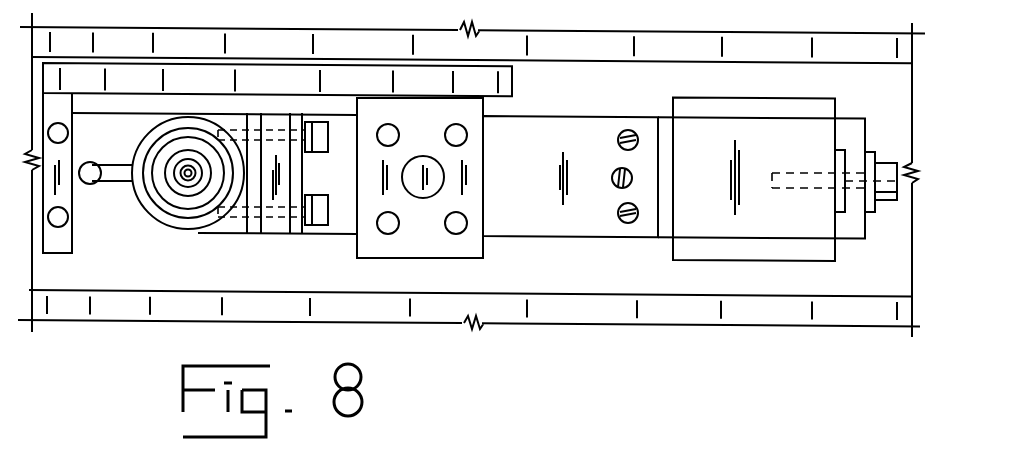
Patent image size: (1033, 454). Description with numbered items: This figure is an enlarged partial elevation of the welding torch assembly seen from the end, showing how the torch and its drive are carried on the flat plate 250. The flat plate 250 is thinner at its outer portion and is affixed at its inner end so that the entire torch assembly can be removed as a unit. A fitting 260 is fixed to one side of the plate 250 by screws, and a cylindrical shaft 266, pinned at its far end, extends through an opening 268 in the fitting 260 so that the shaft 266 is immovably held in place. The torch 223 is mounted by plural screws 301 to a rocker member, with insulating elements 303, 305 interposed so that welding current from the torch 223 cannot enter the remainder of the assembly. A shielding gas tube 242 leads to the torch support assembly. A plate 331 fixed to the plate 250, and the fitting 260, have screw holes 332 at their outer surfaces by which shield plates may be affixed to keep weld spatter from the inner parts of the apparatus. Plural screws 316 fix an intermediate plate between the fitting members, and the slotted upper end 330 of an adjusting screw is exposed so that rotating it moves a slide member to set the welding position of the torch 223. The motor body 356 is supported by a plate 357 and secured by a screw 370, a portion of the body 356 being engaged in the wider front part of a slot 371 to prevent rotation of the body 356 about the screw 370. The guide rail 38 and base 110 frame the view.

The guide rail 38 is at (579, 63).
The base frame 110 is at (560, 293).
The flat plate 250 is at (258, 63).
The plate 331 is at (57, 253).
The screw holes 332 is at (58, 227).
The fitting 260 is at (484, 242).
The torch 223 is at (158, 222).
The shielding gas tube 242 is at (89, 184).
The insulating element 303 is at (254, 235).
The insulating element 305 is at (300, 235).
The screws 301 is at (315, 153).
The cylindrical shaft 266 is at (413, 167).
The opening 268 is at (418, 195).
The screws 316 is at (618, 137).
The slotted upper end of screw 330 is at (613, 178).
The plate 357 is at (702, 241).
The body 356 is at (811, 97).
The slot 371 is at (844, 204).
The screw 370 is at (882, 162).